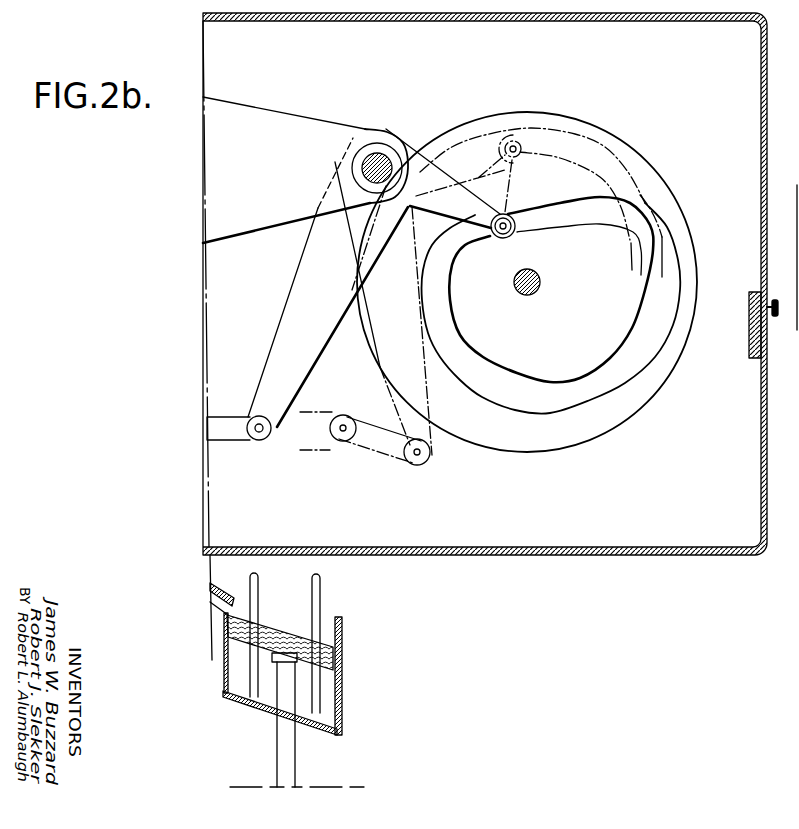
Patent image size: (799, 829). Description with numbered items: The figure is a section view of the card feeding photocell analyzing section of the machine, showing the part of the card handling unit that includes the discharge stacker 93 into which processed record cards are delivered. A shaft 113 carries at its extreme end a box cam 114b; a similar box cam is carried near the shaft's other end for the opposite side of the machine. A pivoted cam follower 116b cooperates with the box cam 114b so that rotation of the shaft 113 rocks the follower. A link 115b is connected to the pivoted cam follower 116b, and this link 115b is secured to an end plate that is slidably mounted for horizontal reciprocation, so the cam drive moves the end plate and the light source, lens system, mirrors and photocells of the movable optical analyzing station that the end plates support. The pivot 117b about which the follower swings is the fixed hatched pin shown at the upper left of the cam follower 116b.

The discharge stacker 93 is at (272, 630).
The shaft 113 is at (536, 292).
The box cam 114b is at (593, 208).
The link 115b is at (222, 422).
The pivoted cam follower 116b is at (287, 312).
The pivot 117b is at (293, 125).